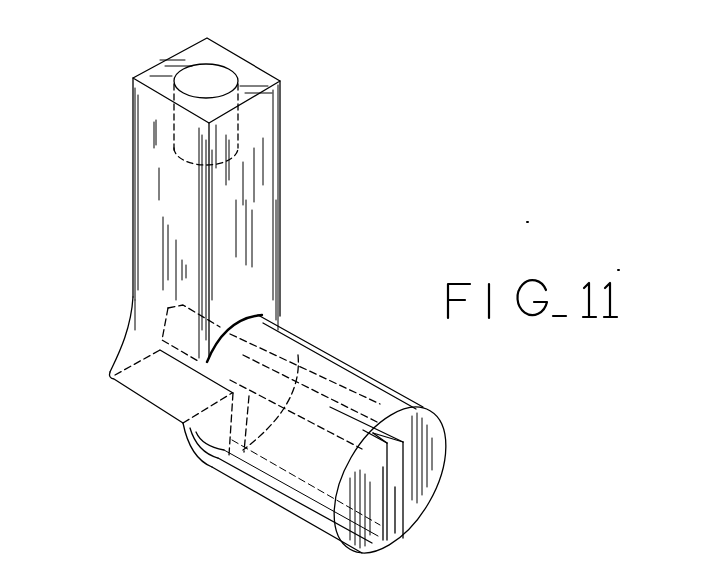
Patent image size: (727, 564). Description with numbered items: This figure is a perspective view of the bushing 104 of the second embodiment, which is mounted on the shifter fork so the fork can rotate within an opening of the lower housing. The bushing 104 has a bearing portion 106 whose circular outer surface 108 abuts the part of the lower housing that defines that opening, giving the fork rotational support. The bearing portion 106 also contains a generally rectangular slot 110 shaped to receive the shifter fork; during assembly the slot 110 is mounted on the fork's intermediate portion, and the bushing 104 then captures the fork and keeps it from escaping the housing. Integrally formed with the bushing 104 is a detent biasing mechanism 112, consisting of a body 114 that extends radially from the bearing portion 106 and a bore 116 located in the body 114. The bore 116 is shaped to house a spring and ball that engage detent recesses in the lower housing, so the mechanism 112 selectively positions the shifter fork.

The bushing 104 is at (345, 236).
The bearing portion 106 is at (278, 504).
The circular outer surface 108 is at (222, 468).
The slot 110 is at (384, 508).
The detent biasing mechanism 112 is at (281, 160).
The body 114 is at (159, 231).
The bore 116 is at (198, 79).